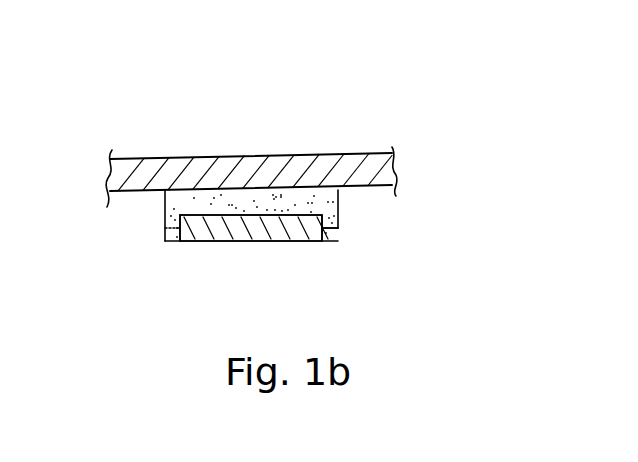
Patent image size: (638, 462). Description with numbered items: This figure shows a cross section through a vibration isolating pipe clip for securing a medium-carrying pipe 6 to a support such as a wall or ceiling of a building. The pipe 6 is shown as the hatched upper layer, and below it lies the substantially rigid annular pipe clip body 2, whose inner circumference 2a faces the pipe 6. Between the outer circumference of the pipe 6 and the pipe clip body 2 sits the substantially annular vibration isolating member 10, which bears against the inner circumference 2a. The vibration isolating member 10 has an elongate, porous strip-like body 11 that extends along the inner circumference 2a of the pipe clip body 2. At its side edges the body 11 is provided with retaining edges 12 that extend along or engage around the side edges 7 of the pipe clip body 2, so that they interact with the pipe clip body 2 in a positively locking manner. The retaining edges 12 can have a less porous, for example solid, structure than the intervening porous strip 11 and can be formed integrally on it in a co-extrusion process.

The pipe clip body 2 is at (257, 227).
The inner circumference of the pipe clip body 2a is at (219, 208).
The pipe 6 is at (320, 168).
The side edges of the pipe clip body 7 is at (187, 234).
The vibration isolating member 10 is at (325, 197).
The strip-like body 11 is at (240, 197).
The retaining edges 12 is at (170, 232).